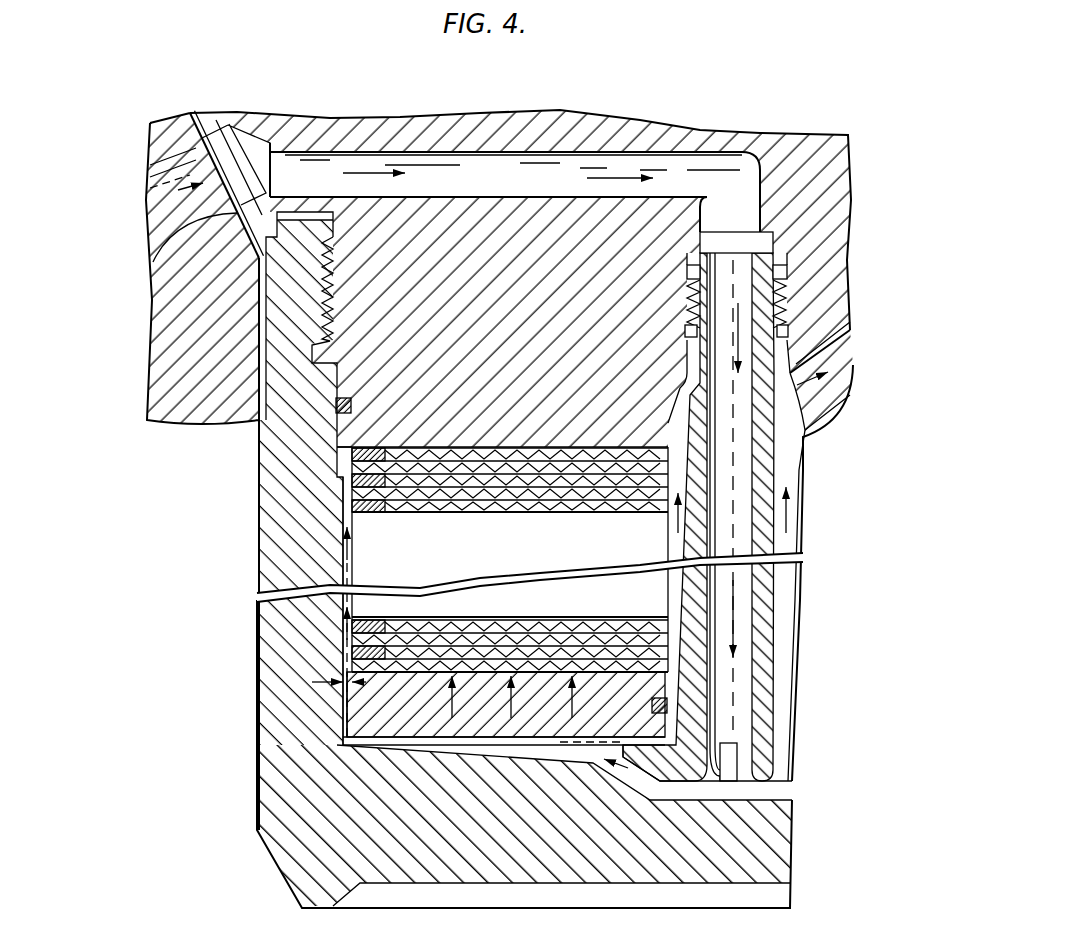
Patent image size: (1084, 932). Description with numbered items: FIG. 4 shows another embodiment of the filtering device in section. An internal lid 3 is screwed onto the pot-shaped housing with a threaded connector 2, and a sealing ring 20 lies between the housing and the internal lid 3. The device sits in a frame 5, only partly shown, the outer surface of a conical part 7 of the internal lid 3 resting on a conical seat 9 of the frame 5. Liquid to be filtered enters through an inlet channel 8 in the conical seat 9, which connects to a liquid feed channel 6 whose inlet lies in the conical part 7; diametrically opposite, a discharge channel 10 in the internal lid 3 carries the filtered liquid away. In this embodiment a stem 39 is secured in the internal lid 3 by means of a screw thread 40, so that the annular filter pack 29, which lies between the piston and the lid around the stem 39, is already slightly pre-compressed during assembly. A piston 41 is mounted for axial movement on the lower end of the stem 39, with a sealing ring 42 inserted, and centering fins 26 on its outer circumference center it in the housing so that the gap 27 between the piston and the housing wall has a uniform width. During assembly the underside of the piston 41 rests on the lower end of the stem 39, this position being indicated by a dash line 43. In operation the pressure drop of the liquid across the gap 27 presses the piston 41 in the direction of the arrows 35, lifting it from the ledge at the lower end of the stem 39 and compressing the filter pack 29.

The threaded connector 2 is at (312, 338).
The internal lid 3 is at (488, 120).
The frame 5 is at (172, 297).
The liquid feed channel 6 is at (368, 150).
The conical part 7 is at (211, 142).
The inlet channel 8 is at (172, 213).
The conical seat 9 is at (172, 262).
The discharge channel 10 is at (838, 348).
The sealing ring 20 is at (336, 406).
The centering fins 26 is at (343, 712).
The gap 27 is at (343, 673).
The annular filter pack 29 is at (228, 438).
The arrows 35 is at (575, 700).
The stem 39 is at (712, 464).
The screw thread 40 is at (790, 302).
The piston 41 is at (494, 748).
The sealing ring 42 is at (670, 707).
The dash line 43 is at (574, 750).